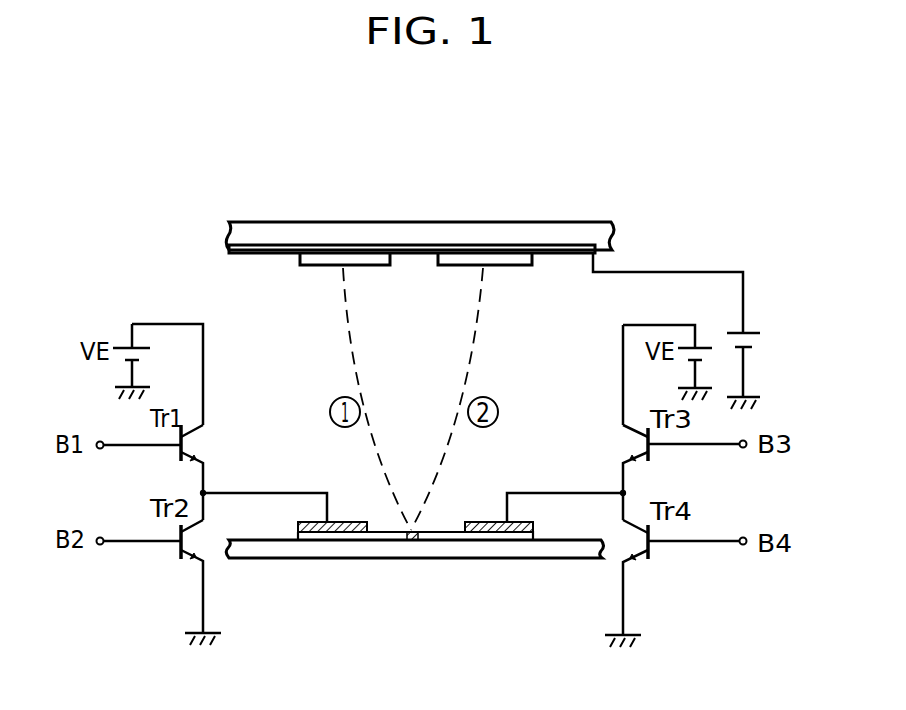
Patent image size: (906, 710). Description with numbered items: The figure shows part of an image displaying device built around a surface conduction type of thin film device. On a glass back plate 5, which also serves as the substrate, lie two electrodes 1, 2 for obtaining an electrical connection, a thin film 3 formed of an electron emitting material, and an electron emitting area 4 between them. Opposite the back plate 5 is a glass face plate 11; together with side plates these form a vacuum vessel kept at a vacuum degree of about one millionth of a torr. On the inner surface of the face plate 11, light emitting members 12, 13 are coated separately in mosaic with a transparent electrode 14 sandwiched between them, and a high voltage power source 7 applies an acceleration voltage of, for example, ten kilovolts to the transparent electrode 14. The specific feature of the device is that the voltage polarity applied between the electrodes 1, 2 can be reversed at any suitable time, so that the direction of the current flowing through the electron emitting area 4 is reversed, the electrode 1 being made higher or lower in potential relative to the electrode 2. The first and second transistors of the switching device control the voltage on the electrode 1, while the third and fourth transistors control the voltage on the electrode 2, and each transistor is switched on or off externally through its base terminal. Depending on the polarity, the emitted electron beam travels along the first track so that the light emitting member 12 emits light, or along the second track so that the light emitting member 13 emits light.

The electrode 1 is at (303, 521).
The electrode 2 is at (537, 507).
The thin film 3 is at (443, 531).
The electron emitting area 4 is at (410, 531).
The back plate 5 is at (352, 559).
The high voltage power source 7 is at (750, 329).
The face plate 11 is at (555, 222).
The light emitting member 12 is at (316, 266).
The light emitting member 13 is at (508, 266).
The transparent electrode 14 is at (245, 255).